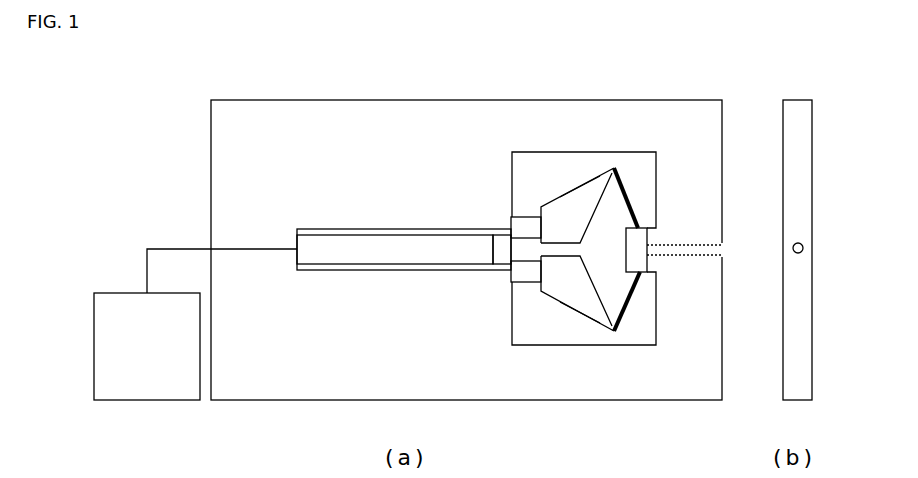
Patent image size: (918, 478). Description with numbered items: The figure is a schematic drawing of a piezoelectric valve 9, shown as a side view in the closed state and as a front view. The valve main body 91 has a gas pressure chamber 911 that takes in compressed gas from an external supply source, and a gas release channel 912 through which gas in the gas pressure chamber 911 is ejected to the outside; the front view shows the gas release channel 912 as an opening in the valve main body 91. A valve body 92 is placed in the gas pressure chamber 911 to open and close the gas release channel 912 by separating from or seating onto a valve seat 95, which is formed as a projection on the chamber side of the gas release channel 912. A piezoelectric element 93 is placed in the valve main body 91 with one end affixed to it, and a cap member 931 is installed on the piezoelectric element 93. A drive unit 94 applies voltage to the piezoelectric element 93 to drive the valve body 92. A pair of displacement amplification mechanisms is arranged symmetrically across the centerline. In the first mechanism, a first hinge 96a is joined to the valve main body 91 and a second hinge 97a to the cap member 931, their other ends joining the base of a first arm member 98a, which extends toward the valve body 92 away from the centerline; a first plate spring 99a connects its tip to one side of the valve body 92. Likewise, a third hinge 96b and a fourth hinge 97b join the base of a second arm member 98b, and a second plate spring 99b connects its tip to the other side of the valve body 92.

The piezoelectric valve 9 is at (370, 85).
The valve main body 91 is at (240, 135).
The gas pressure chamber 911 is at (520, 157).
The gas release channel 912 is at (702, 247).
The valve body 92 is at (655, 268).
The piezoelectric element 93 is at (352, 257).
The cap member 931 is at (498, 253).
The drive unit 94 is at (128, 300).
The valve seat 95 is at (647, 230).
The first hinge 96a is at (523, 217).
The third hinge 96b is at (513, 288).
The second hinge 97a is at (532, 217).
The fourth hinge 97b is at (533, 287).
The first arm member 98a is at (585, 190).
The second arm member 98b is at (590, 312).
The first plate spring 99a is at (640, 187).
The second plate spring 99b is at (633, 302).